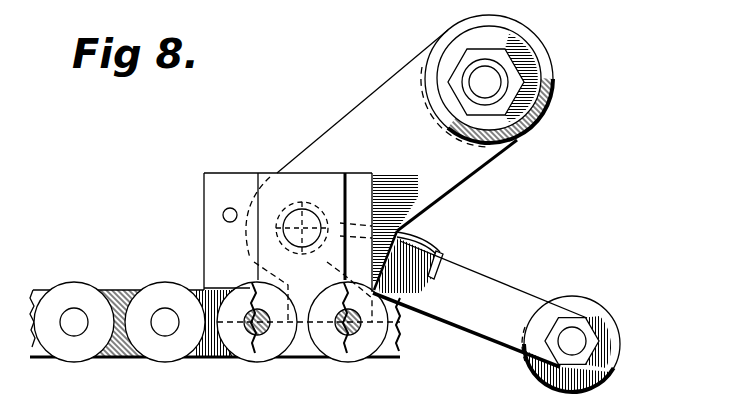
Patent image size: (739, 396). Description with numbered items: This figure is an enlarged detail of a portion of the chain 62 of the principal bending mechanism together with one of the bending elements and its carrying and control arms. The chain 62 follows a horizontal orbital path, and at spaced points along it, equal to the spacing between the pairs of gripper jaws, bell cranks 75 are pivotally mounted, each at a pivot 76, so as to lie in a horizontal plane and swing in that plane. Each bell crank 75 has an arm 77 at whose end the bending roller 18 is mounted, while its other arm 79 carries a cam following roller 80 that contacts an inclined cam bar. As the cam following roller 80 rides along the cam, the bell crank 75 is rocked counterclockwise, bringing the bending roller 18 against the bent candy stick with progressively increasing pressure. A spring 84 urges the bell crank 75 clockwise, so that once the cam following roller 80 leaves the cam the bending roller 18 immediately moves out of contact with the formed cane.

The roller 18 is at (551, 100).
The chain 62 is at (128, 304).
The bell crank 75 is at (381, 104).
The pivot 76 is at (303, 226).
The arm 77 is at (446, 180).
The other arm 79 is at (510, 293).
The cam following roller 80 is at (597, 312).
The spring 84 is at (428, 238).